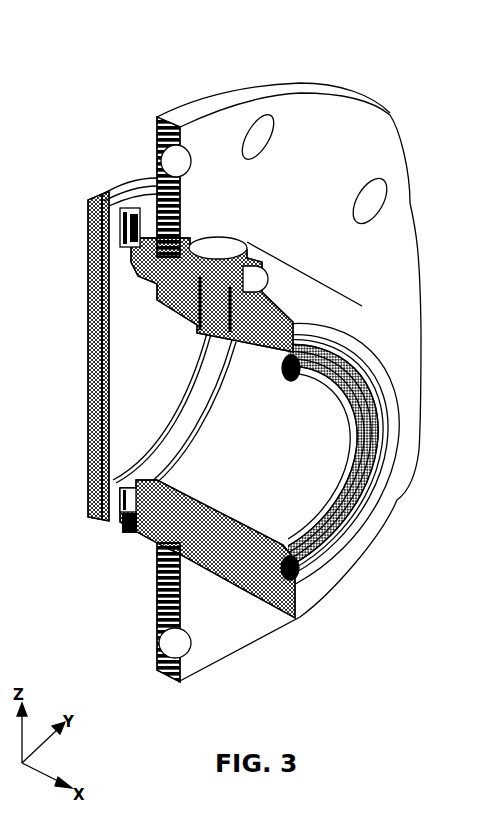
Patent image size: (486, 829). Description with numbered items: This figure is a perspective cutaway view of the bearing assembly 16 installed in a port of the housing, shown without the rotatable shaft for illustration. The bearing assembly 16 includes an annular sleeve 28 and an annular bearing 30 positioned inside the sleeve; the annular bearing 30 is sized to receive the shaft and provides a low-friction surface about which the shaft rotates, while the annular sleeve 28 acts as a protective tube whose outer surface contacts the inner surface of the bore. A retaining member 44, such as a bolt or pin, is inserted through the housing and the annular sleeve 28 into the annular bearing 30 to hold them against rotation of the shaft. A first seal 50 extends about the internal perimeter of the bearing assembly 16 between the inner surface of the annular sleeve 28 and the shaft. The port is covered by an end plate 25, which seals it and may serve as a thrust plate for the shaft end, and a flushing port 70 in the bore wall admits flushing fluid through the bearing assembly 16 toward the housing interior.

The bearing assembly 16 is at (422, 463).
The end plate 25 is at (88, 383).
The annular sleeve 28 is at (270, 360).
The annular bearing 30 is at (232, 362).
The retaining member 44 is at (232, 250).
The first seal 50 is at (328, 522).
The flushing port 70 is at (127, 534).